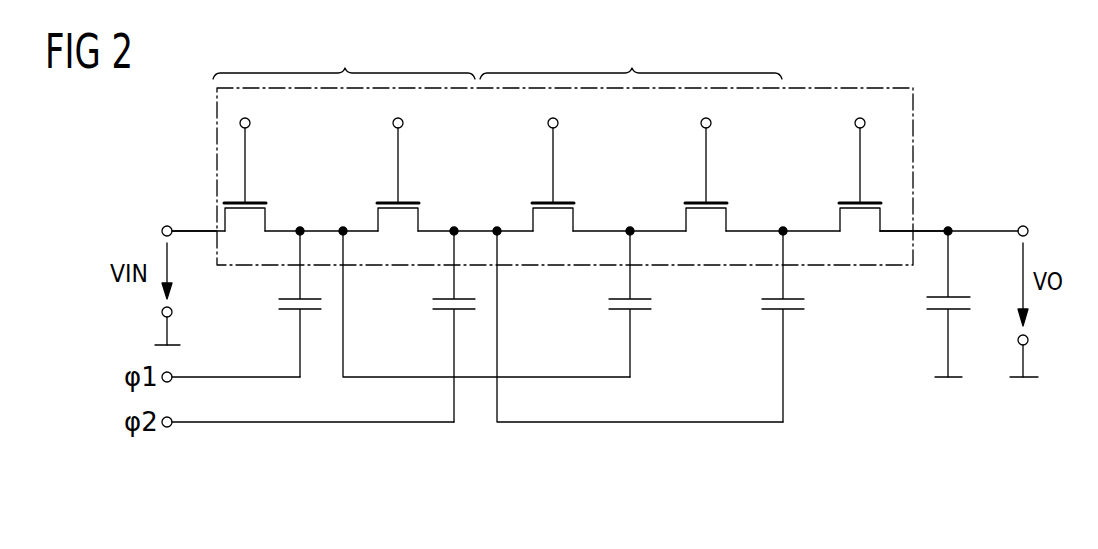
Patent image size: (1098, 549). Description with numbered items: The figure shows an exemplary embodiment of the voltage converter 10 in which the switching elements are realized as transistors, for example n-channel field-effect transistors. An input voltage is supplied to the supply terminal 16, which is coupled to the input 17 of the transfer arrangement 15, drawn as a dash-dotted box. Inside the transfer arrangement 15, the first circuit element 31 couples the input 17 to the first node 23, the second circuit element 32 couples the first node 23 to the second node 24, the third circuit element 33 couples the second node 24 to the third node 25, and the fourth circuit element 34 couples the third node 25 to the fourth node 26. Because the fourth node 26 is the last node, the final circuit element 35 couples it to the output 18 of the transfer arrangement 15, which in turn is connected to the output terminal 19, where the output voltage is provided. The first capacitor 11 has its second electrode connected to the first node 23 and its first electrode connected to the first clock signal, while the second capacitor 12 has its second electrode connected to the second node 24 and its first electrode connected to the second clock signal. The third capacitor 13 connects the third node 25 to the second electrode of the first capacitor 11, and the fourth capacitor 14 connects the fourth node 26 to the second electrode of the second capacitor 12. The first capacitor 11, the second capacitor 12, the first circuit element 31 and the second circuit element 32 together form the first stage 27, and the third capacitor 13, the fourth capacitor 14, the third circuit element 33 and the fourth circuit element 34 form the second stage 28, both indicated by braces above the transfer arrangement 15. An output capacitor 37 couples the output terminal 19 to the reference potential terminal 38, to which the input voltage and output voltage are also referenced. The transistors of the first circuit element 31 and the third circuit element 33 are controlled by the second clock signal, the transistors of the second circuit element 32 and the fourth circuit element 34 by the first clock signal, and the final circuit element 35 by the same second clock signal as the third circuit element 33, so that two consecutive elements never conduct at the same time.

The voltage converter 10 is at (947, 88).
The first capacitor 11 is at (310, 311).
The second capacitor 12 is at (464, 311).
The third capacitor 13 is at (640, 311).
The fourth capacitor 14 is at (793, 311).
The transfer arrangement 15 is at (833, 88).
The supply terminal 16 is at (166, 226).
The input 17 is at (214, 229).
The output 18 is at (915, 229).
The output terminal 19 is at (1023, 226).
The first node 23 is at (300, 226).
The second node 24 is at (454, 226).
The third node 25 is at (630, 226).
The fourth node 26 is at (783, 226).
The first stage 27 is at (344, 55).
The second stage 28 is at (631, 55).
The first circuit element 31 is at (250, 203).
The second circuit element 32 is at (403, 203).
The third circuit element 33 is at (558, 203).
The fourth circuit element 34 is at (711, 203).
The final circuit element 35 is at (865, 203).
The output capacitor 37 is at (938, 312).
The reference potential terminal 38 is at (176, 343).